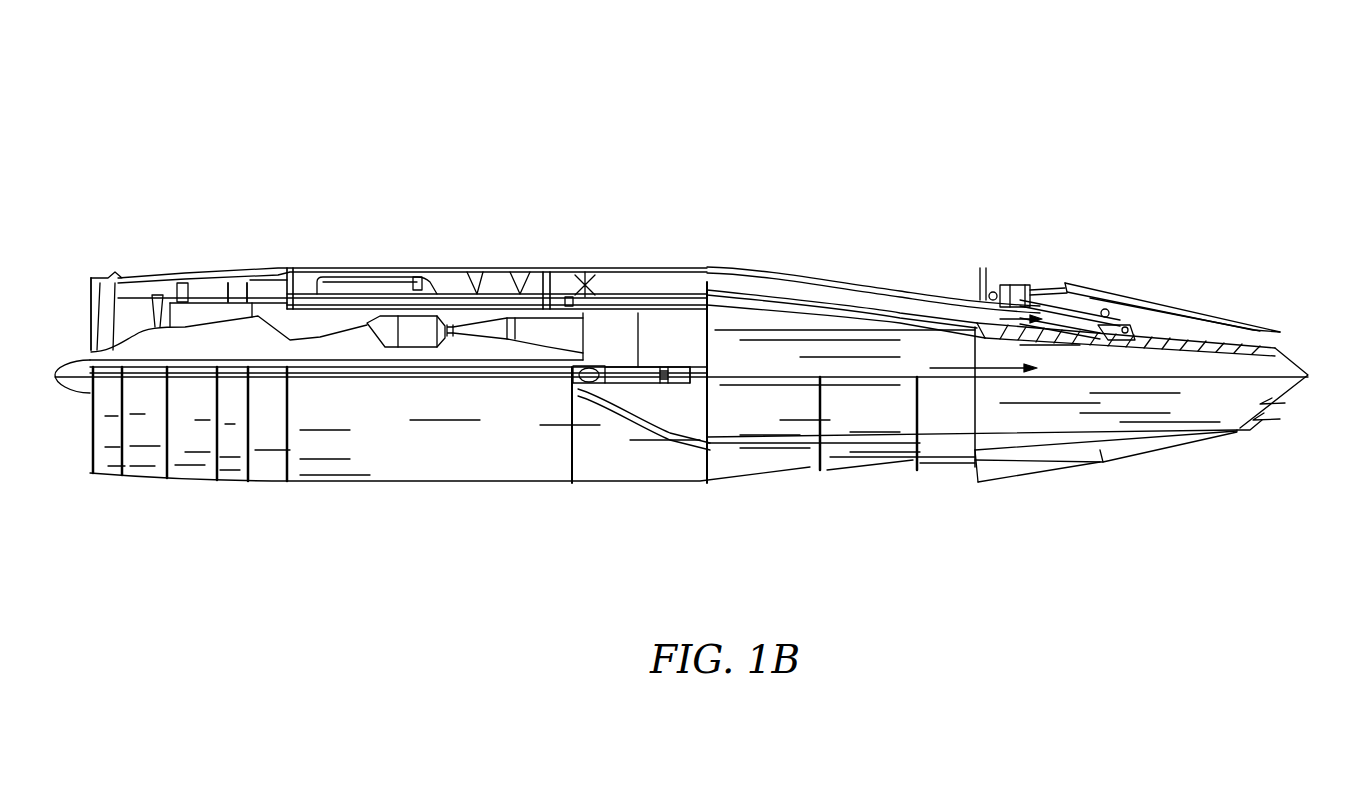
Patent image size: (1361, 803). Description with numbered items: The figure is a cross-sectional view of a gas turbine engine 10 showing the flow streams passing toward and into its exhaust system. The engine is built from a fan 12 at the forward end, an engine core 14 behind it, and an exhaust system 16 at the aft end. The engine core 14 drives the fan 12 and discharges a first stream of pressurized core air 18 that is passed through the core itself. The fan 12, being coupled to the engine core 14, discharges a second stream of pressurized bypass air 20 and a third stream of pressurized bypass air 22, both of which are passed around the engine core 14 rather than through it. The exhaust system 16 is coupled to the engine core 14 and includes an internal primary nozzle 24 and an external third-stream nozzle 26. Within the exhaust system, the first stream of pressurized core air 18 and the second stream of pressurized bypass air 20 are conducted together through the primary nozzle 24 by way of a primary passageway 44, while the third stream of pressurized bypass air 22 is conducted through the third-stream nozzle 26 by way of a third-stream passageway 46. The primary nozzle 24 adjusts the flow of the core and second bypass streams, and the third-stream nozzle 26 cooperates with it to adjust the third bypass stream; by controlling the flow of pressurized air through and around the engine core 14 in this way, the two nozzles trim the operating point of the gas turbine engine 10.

The gas turbine engine 10 is at (708, 302).
The fan 12 is at (98, 262).
The engine core 14 is at (617, 312).
The exhaust system 16 is at (1168, 338).
The first stream of pressurized core air 18 is at (993, 378).
The second stream of pressurized bypass air 20 is at (518, 284).
The third stream of pressurized bypass air 22 is at (441, 266).
The primary nozzle 24 is at (1305, 355).
The third-stream nozzle 26 is at (1284, 312).
The primary passageway 44 is at (1178, 340).
The third-stream passageway 46 is at (1150, 315).